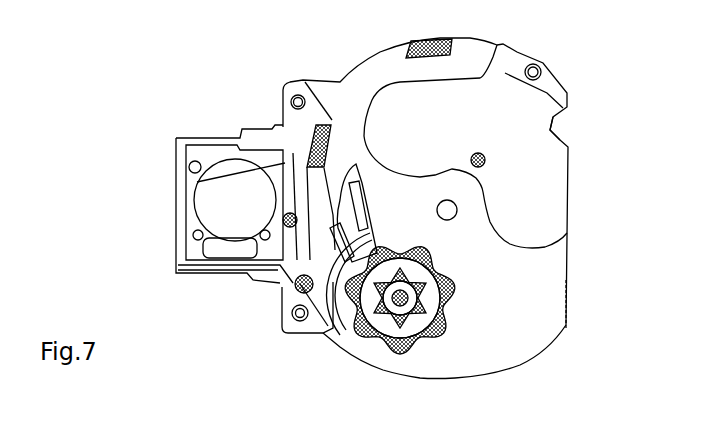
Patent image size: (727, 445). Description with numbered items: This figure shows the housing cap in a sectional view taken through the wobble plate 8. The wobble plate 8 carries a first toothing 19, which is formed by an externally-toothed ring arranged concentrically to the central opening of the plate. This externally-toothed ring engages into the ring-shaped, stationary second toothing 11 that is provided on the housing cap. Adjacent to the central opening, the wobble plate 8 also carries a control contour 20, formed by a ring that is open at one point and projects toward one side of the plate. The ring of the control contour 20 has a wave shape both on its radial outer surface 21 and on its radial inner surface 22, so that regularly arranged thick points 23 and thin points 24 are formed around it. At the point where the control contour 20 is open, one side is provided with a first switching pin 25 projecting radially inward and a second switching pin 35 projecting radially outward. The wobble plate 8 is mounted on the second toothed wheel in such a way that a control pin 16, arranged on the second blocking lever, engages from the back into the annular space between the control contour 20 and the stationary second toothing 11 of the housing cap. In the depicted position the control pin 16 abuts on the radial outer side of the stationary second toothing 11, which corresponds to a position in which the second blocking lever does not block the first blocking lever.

The wobble plate 8 is at (460, 292).
The second toothing 11 is at (368, 298).
The control pin 16 is at (372, 282).
The first toothing 19 is at (401, 307).
The control contour 20 is at (430, 332).
The radial outer surface 21 is at (448, 313).
The radial inner surface 22 is at (450, 288).
The thick points 23 is at (383, 320).
The thin points 24 is at (397, 327).
The first switching pin 25 is at (366, 293).
The second switching pin 35 is at (372, 282).